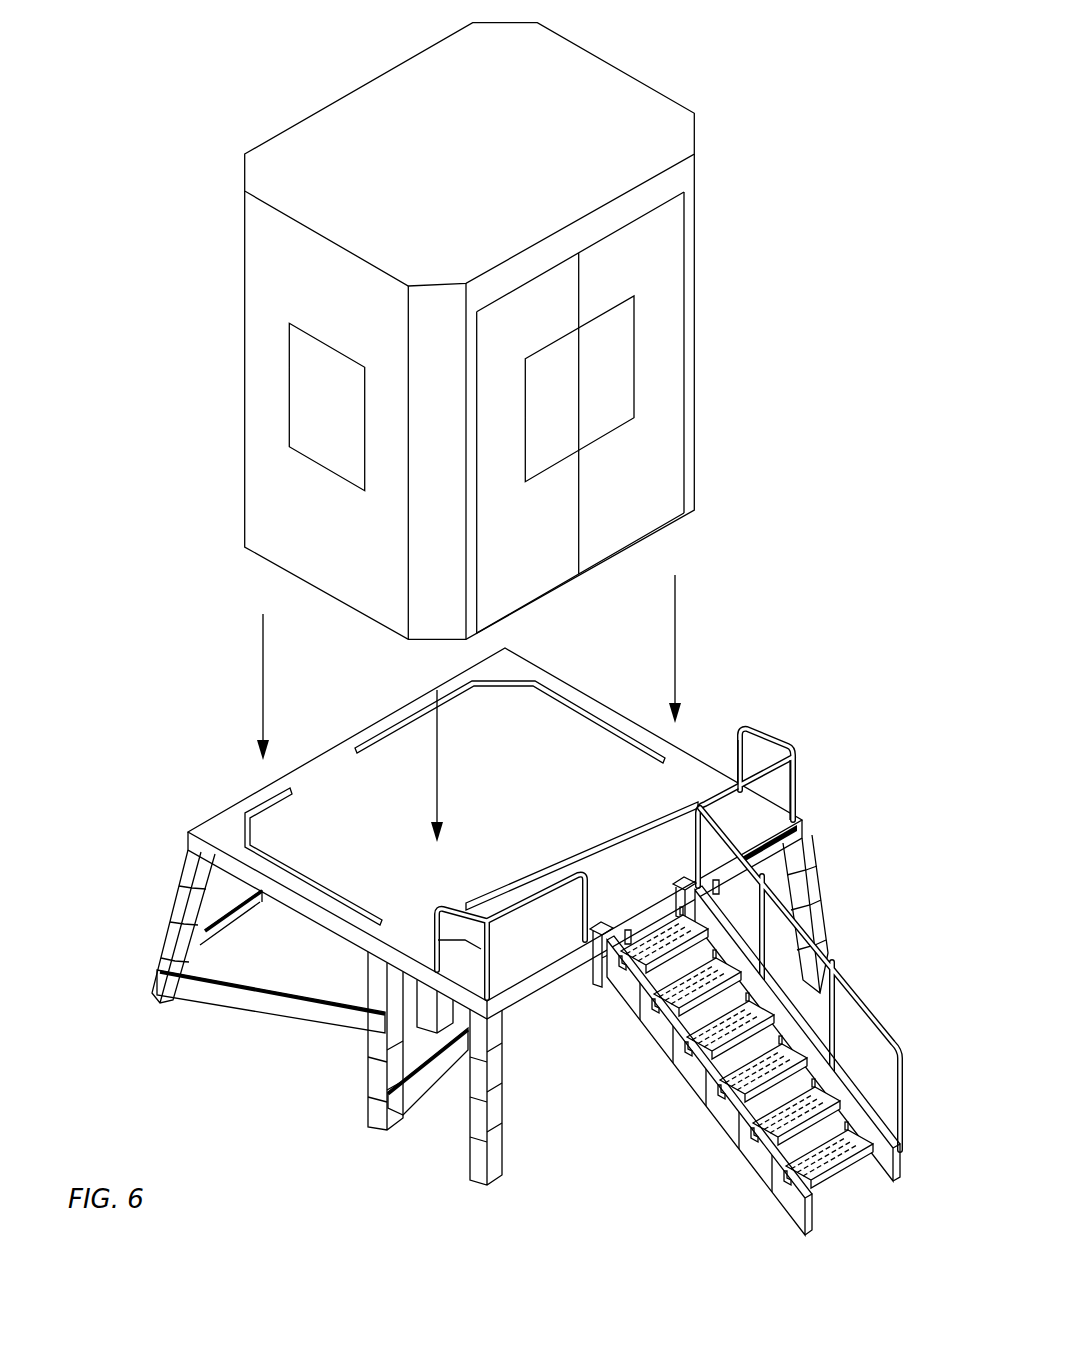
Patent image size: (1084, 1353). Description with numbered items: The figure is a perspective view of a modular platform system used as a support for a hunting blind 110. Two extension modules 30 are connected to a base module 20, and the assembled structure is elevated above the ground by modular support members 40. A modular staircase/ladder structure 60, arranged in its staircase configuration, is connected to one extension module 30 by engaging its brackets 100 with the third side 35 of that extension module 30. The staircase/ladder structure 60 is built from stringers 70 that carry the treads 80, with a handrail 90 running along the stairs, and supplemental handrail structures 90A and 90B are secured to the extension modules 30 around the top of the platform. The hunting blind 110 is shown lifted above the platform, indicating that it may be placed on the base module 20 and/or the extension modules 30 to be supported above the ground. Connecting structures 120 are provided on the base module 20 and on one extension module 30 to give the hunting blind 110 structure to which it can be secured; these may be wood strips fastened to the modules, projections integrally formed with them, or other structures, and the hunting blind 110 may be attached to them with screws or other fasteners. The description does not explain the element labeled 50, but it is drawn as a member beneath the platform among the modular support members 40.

The base module 20 is at (186, 758).
The extension module 30 is at (737, 778).
The third side 35 is at (628, 940).
The modular support member 40 is at (378, 1108).
The brace 50 is at (240, 922).
The modular staircase/ladder structure 60 is at (749, 1079).
The stringer 70 is at (753, 1060).
The tread 80 is at (835, 1177).
The handrail 90 is at (888, 998).
The supplemental handrail structure 90A is at (818, 764).
The supplemental handrail structure 90B is at (473, 907).
The bracket 100 is at (593, 973).
The hunting blind 110 is at (758, 133).
The connecting structure 120 is at (572, 699).